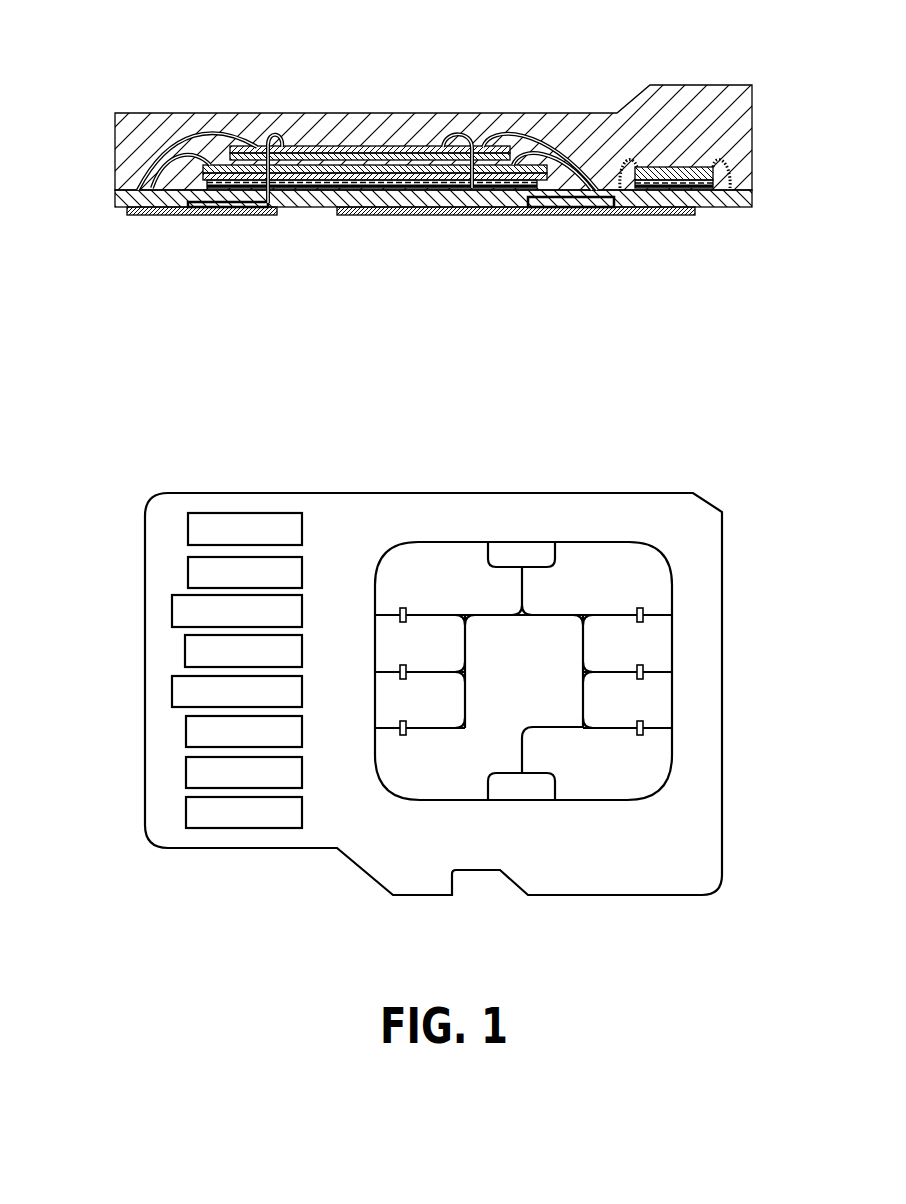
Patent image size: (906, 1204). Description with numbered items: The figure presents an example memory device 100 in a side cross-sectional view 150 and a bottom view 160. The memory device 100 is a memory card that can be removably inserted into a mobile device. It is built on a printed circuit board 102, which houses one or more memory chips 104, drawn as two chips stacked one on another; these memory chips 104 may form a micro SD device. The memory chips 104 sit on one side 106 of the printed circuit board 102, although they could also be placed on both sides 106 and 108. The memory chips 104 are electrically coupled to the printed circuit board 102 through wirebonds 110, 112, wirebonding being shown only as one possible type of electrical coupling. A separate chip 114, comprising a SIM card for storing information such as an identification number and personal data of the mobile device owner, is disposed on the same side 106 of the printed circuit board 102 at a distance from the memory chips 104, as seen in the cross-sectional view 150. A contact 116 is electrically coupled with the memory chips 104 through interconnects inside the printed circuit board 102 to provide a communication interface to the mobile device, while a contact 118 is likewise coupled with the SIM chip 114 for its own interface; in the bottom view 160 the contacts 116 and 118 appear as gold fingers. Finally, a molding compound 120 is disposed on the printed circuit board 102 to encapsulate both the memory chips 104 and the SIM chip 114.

The memory device 100 is at (113, 58).
The printed circuit board 102 is at (752, 198).
The memory chips 104 is at (342, 150).
The first side of the PCB 106 is at (132, 183).
The second side of the PCB 108 is at (717, 210).
The wirebond 110 is at (320, 188).
The wirebond 112 is at (178, 215).
The chip 114 is at (670, 190).
The contact 116 is at (235, 218).
The contact 118 is at (493, 215).
The molding compound 120 is at (128, 126).
The side cross-sectional view 150 is at (762, 148).
The bottom view 160 is at (747, 667).